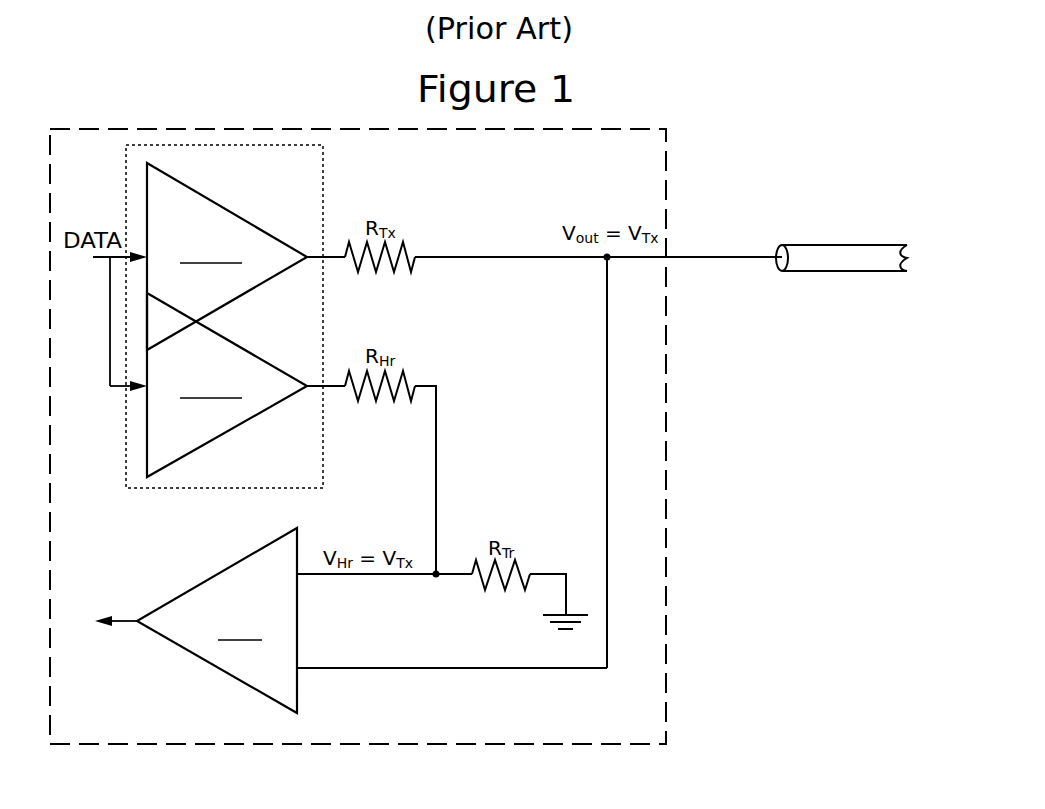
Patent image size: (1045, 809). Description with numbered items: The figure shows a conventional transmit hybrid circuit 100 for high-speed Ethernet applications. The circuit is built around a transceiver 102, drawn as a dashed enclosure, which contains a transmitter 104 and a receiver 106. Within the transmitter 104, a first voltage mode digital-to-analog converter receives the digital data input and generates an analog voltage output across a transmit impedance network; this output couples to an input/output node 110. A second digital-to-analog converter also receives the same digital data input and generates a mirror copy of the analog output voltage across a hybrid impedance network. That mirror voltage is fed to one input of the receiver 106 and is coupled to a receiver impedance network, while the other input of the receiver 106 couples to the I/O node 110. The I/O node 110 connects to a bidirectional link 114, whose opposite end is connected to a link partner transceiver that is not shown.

The transmit hybrid circuit 100 is at (753, 156).
The transceiver 102 is at (666, 710).
The transmitter 104 is at (323, 200).
The receiver 106 is at (255, 620).
The input/output (I/O) node 110 is at (605, 258).
The bidirectional link 114 is at (707, 262).